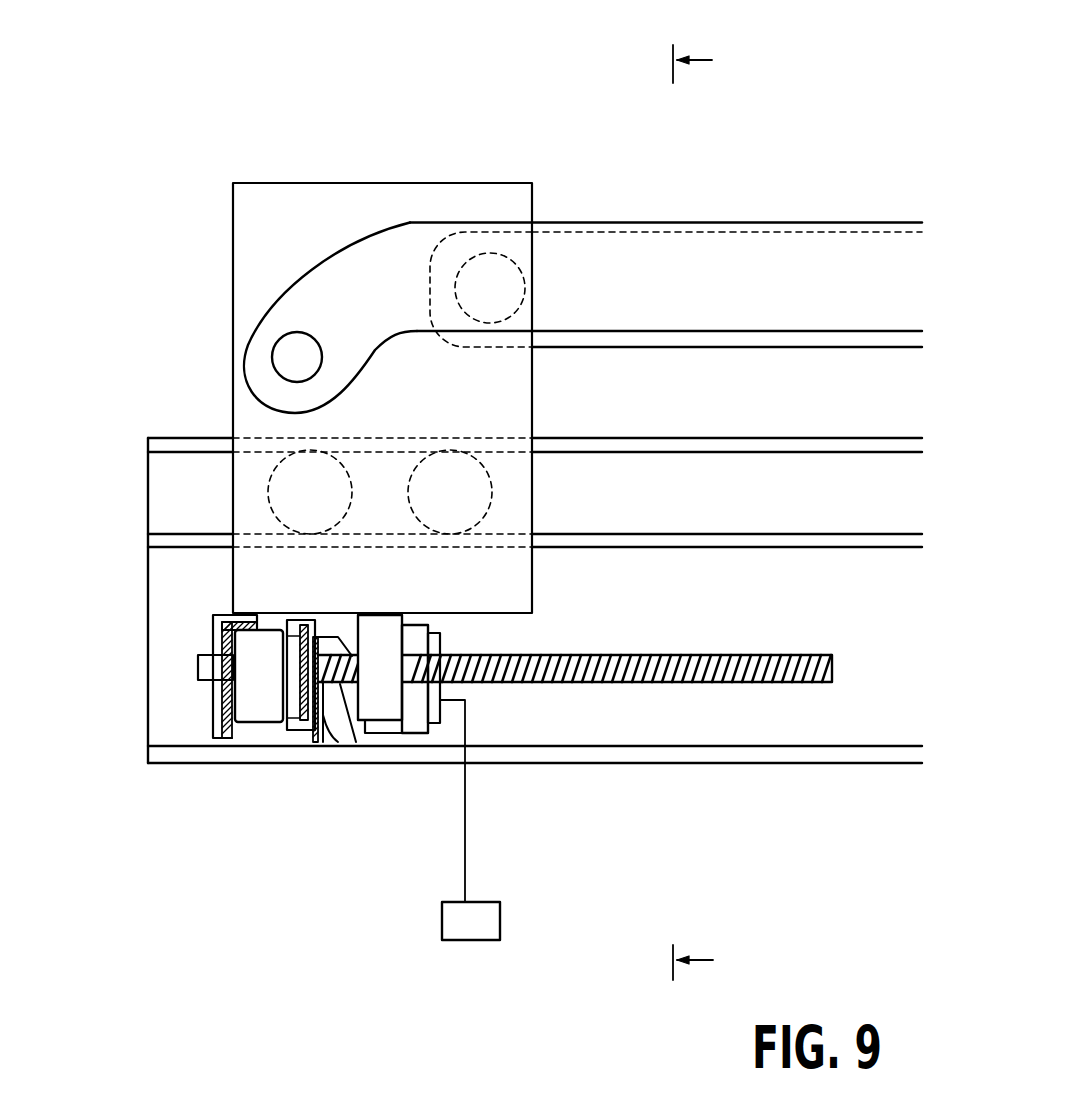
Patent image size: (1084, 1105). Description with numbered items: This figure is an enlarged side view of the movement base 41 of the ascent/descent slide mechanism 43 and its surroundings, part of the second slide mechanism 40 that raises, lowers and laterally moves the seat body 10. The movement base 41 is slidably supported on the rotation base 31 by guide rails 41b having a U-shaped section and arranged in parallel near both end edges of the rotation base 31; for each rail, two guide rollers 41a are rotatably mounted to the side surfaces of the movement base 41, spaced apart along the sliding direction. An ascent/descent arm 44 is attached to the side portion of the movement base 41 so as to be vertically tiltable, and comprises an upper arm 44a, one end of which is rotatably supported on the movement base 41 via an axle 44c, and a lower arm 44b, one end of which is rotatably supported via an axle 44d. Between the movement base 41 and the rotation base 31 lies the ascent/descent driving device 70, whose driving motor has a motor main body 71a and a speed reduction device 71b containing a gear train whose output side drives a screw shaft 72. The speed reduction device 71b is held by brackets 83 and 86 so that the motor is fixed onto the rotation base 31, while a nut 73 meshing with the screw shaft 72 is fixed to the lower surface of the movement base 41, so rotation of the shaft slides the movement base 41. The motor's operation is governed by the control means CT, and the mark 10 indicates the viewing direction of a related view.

The seat body 10 is at (701, 494).
The rotation base 31 is at (658, 763).
The second slide mechanism 40 is at (420, 147).
The movement base 41 is at (320, 213).
The guide rollers 41a is at (280, 500).
The guide rails 41b is at (200, 437).
The ascent/descent slide mechanism 43 is at (137, 608).
The ascent/descent arm 44 is at (752, 215).
The upper arm 44a is at (842, 233).
The lower arm 44b is at (907, 260).
The axle 44c is at (487, 283).
The axle 44d is at (293, 352).
The ascent/descent driving device 70 is at (187, 607).
The motor main body 71a is at (417, 718).
The speed reduction device 71b is at (257, 620).
The screw shaft 72 is at (493, 690).
The nut 73 is at (380, 698).
The bracket 83 is at (337, 713).
The bracket 86 is at (242, 730).
The control means CT is at (470, 820).